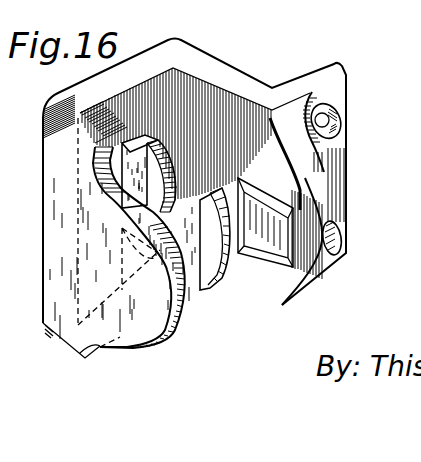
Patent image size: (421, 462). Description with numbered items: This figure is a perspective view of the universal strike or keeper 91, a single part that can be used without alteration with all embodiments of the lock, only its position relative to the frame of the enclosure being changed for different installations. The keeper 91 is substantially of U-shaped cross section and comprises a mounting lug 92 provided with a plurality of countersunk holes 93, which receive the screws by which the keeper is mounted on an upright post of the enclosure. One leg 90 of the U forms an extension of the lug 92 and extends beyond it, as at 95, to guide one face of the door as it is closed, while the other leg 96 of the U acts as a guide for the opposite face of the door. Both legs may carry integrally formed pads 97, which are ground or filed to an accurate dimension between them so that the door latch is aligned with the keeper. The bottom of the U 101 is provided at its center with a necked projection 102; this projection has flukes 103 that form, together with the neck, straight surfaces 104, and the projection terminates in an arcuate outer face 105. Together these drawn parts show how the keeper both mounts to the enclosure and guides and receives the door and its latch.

The leg of the U 90 is at (200, 55).
The keeper 91 is at (252, 48).
The mounting lug 92 is at (341, 145).
The countersunk holes 93 is at (340, 112).
The extension of leg 95 is at (310, 172).
The other leg of the U 96 is at (95, 202).
The pads 97 is at (268, 240).
The bottom of the U 101 is at (103, 87).
The necked projection 102 is at (170, 157).
The flukes 103 is at (226, 200).
The straight surfaces 104 is at (183, 190).
The arcuate outer face 105 is at (233, 233).